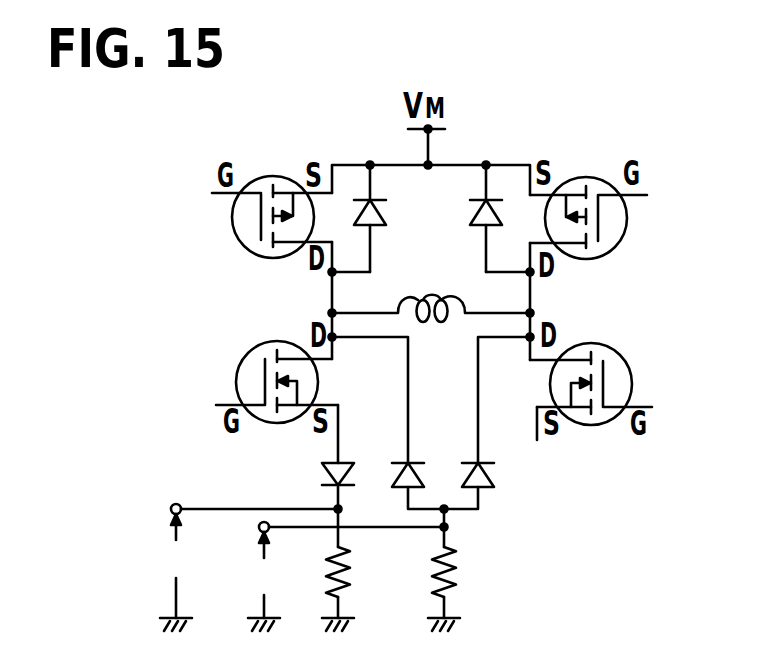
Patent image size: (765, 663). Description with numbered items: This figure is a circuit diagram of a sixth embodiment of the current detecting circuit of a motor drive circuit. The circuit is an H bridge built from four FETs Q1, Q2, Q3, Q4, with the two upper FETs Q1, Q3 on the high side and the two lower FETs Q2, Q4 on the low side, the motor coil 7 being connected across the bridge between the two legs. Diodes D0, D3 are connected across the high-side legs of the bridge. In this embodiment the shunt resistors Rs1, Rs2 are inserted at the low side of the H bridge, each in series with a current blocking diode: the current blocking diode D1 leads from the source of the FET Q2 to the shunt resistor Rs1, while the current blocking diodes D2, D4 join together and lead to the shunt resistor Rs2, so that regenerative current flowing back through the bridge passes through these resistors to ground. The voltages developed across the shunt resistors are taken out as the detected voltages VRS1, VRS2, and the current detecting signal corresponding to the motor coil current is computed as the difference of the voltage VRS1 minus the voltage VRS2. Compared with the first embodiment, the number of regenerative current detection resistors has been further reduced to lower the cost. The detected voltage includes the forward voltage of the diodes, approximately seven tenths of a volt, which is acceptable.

The motor coil (inductor) 7 is at (437, 323).
The FET Q1 is at (258, 217).
The FET Q2 is at (263, 382).
The FET Q3 is at (603, 218).
The FET Q4 is at (606, 384).
The diode D0 is at (388, 206).
The current blocking diode D1 is at (340, 462).
The current blocking diode D2 is at (424, 473).
The diode D3 is at (476, 223).
The current blocking diode D4 is at (490, 470).
The shunt resistor Rs1 is at (367, 589).
The shunt resistor Rs2 is at (474, 589).
The detected voltage VRS1 is at (172, 567).
The detected voltage VRS2 is at (261, 576).